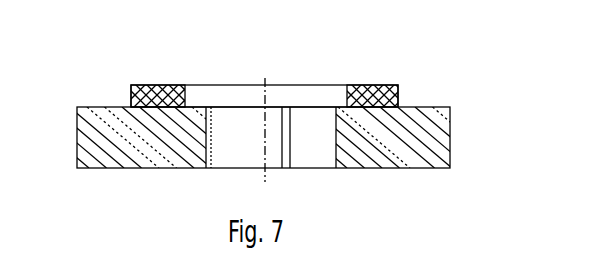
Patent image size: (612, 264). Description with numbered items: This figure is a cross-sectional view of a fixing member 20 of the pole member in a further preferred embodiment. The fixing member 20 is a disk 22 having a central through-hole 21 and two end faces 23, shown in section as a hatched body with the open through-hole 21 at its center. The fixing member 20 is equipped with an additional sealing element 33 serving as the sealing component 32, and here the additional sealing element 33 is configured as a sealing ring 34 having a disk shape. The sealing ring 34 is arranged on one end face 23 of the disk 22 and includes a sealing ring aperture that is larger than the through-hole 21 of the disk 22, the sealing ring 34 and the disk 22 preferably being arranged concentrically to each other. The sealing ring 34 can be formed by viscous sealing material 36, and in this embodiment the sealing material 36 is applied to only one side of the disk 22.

The fixing member 20 is at (470, 106).
The through-hole 21 is at (313, 160).
The disk 22 is at (435, 147).
The end face 23 is at (100, 104).
The sealing ring 34 is at (379, 86).
The sealing component 32 is at (162, 95).
The additional sealing element 33 is at (378, 95).
The sealing material 36 is at (264, 96).